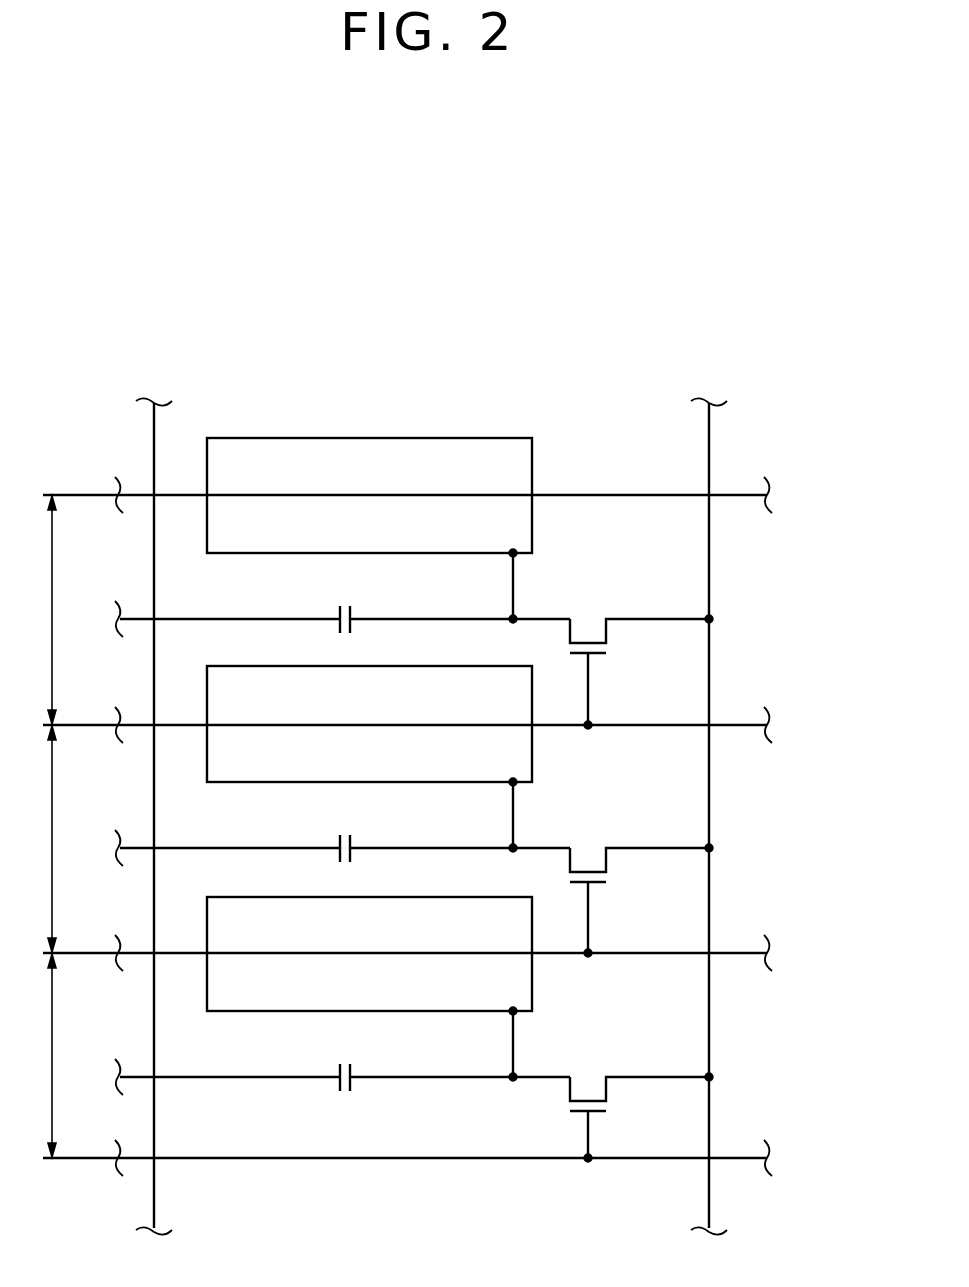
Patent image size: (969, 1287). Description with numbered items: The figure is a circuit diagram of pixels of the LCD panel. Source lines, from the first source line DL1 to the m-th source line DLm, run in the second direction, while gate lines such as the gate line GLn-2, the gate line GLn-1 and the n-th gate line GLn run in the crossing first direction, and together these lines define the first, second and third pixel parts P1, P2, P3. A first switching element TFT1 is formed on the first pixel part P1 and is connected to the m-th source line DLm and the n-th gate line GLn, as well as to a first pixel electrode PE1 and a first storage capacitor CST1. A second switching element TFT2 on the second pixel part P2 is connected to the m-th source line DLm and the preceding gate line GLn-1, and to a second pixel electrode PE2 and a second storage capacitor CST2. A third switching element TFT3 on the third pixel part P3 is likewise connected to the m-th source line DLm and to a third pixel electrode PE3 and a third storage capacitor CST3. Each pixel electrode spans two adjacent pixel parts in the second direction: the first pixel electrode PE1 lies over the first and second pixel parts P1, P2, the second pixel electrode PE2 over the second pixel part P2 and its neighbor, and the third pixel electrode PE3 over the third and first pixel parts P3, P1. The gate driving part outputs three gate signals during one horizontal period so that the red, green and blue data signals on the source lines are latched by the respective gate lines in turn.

The source line DL1 is at (148, 801).
The m-th source line DLm is at (708, 801).
The (n-2)-th gate line GLn-2 is at (452, 495).
The (n-1)-th gate line GLn-1 is at (452, 725).
The n-th gate line GLn is at (439, 953).
The first pixel electrode PE1 is at (369, 724).
The second pixel electrode PE2 is at (369, 495).
The third pixel electrode PE3 is at (369, 954).
The first storage capacitor CST1 is at (342, 832).
The second storage capacitor CST2 is at (342, 603).
The third storage capacitor CST3 is at (342, 1061).
The first switching element TFT1 is at (635, 884).
The second switching element TFT2 is at (635, 656).
The third switching element TFT3 is at (635, 1101).
The first pixel part P1 is at (32, 839).
The second pixel part P2 is at (32, 610).
The third pixel part P3 is at (32, 1055).